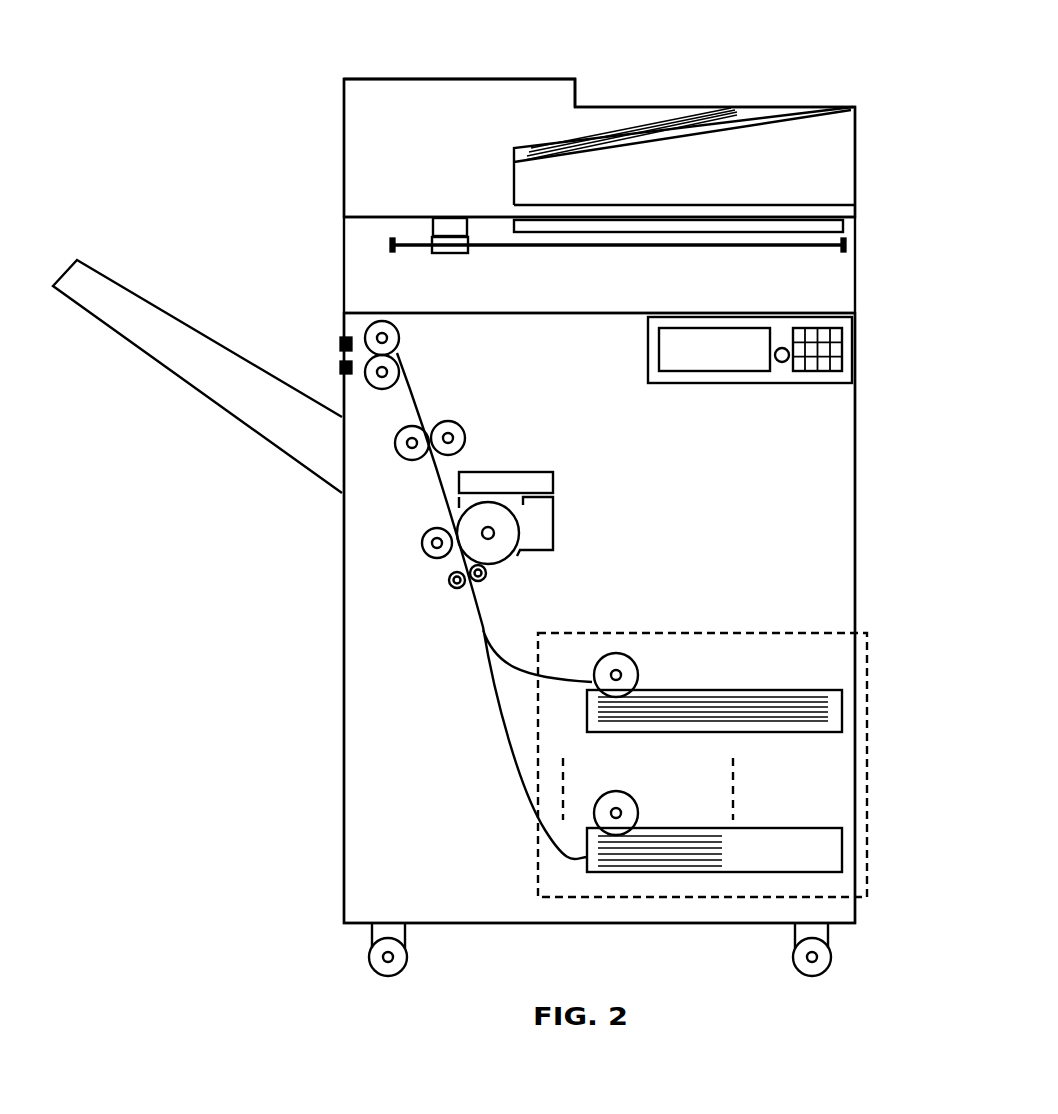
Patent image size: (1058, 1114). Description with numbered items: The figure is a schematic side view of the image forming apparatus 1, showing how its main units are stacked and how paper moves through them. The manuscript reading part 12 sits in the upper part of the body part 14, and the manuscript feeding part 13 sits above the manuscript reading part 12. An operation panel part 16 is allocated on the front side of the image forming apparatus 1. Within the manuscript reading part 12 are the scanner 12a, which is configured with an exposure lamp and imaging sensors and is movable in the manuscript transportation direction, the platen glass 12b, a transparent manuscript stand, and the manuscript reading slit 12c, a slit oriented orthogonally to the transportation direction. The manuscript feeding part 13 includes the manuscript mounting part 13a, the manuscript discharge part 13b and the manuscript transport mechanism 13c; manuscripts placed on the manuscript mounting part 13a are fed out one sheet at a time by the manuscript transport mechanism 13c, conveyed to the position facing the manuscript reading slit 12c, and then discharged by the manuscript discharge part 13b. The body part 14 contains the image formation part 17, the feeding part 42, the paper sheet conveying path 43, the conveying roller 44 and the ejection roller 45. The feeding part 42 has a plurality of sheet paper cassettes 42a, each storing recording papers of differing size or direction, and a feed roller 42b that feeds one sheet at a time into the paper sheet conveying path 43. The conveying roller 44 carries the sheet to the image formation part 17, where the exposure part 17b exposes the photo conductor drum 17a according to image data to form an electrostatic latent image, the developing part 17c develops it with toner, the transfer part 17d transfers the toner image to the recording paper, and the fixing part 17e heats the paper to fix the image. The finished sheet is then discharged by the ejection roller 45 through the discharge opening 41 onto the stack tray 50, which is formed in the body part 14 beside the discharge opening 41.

The image forming apparatus 1 is at (273, 110).
The manuscript reading part 12 is at (341, 253).
The scanner 12a is at (453, 256).
The platen glass 12b is at (836, 228).
The manuscript reading slit 12c is at (451, 216).
The manuscript feeding part 13 is at (341, 147).
The manuscript mounting part 13a is at (744, 126).
The manuscript discharge part 13b is at (713, 205).
The manuscript transport mechanism 13c is at (460, 86).
The body part 14 is at (860, 591).
The operation panel part 16 is at (852, 370).
The image formation part 17 is at (652, 495).
The photo conductor drum 17a is at (500, 562).
The exposure part 17b is at (553, 482).
The developing part 17c is at (553, 515).
The transfer part 17d is at (423, 541).
The fixing part 17e is at (466, 437).
The discharge opening 41 is at (345, 353).
The feeding part 42 is at (867, 690).
The sheet paper cassette 42a is at (768, 692).
The feed roller 42b is at (639, 672).
The paper sheet conveying path 43 is at (474, 584).
The conveying roller 44 is at (449, 580).
The ejection roller 45 is at (400, 340).
The stack tray 50 is at (226, 410).